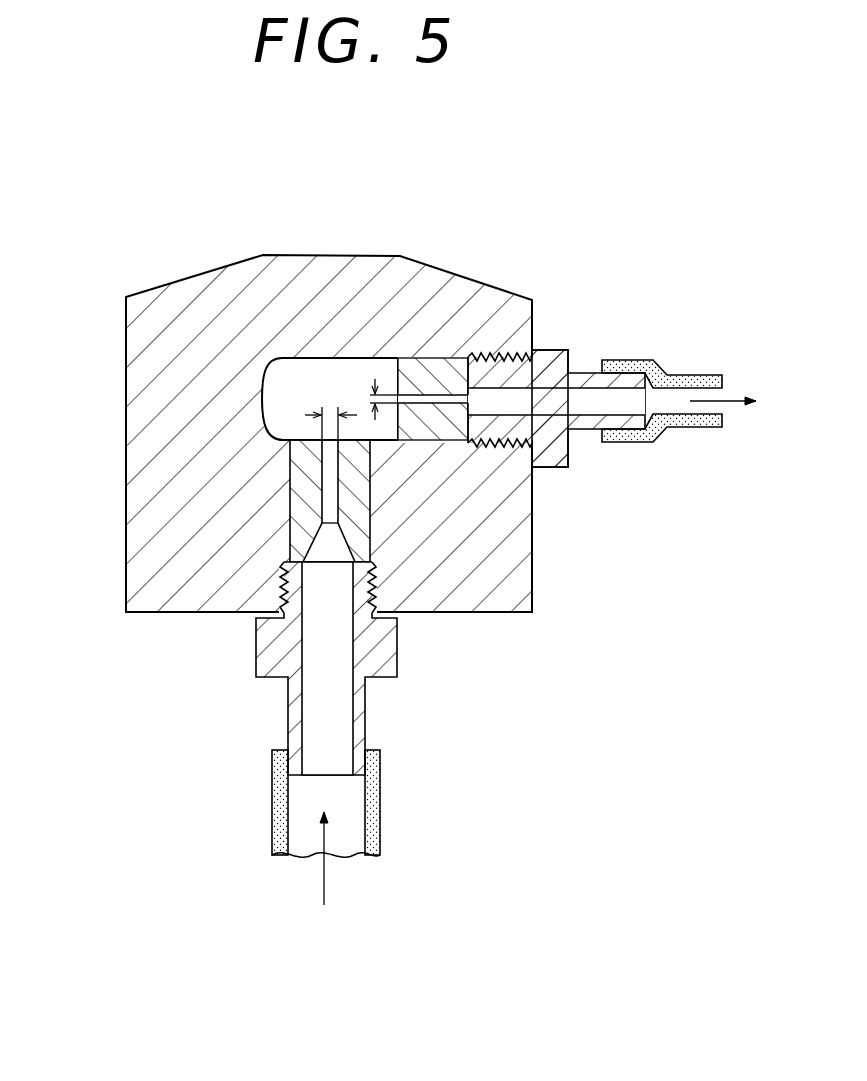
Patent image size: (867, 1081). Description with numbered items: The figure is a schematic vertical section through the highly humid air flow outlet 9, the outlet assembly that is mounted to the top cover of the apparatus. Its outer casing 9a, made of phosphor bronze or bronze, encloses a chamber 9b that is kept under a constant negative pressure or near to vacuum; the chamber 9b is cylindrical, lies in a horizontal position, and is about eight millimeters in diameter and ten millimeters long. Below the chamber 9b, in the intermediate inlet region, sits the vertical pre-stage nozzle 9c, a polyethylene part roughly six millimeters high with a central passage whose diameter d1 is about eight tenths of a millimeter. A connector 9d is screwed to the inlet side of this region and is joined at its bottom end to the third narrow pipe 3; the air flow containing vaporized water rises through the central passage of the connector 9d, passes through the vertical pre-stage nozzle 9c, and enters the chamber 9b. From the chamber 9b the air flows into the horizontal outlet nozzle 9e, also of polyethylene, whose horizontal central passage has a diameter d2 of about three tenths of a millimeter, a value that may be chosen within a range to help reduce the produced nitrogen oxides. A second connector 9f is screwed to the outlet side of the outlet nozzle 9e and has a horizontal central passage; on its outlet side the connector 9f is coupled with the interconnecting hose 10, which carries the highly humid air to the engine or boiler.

The highly humid air flow outlet 9 is at (337, 445).
The outer casing 9a is at (435, 282).
The chamber 9b is at (275, 383).
The vertical pre-stage nozzle 9c is at (363, 542).
The connector 9d is at (268, 655).
The horizontal outlet nozzle 9e is at (438, 362).
The connector 9f is at (556, 458).
The interconnecting hose 10 is at (688, 376).
The third narrow pipe 3 is at (378, 808).